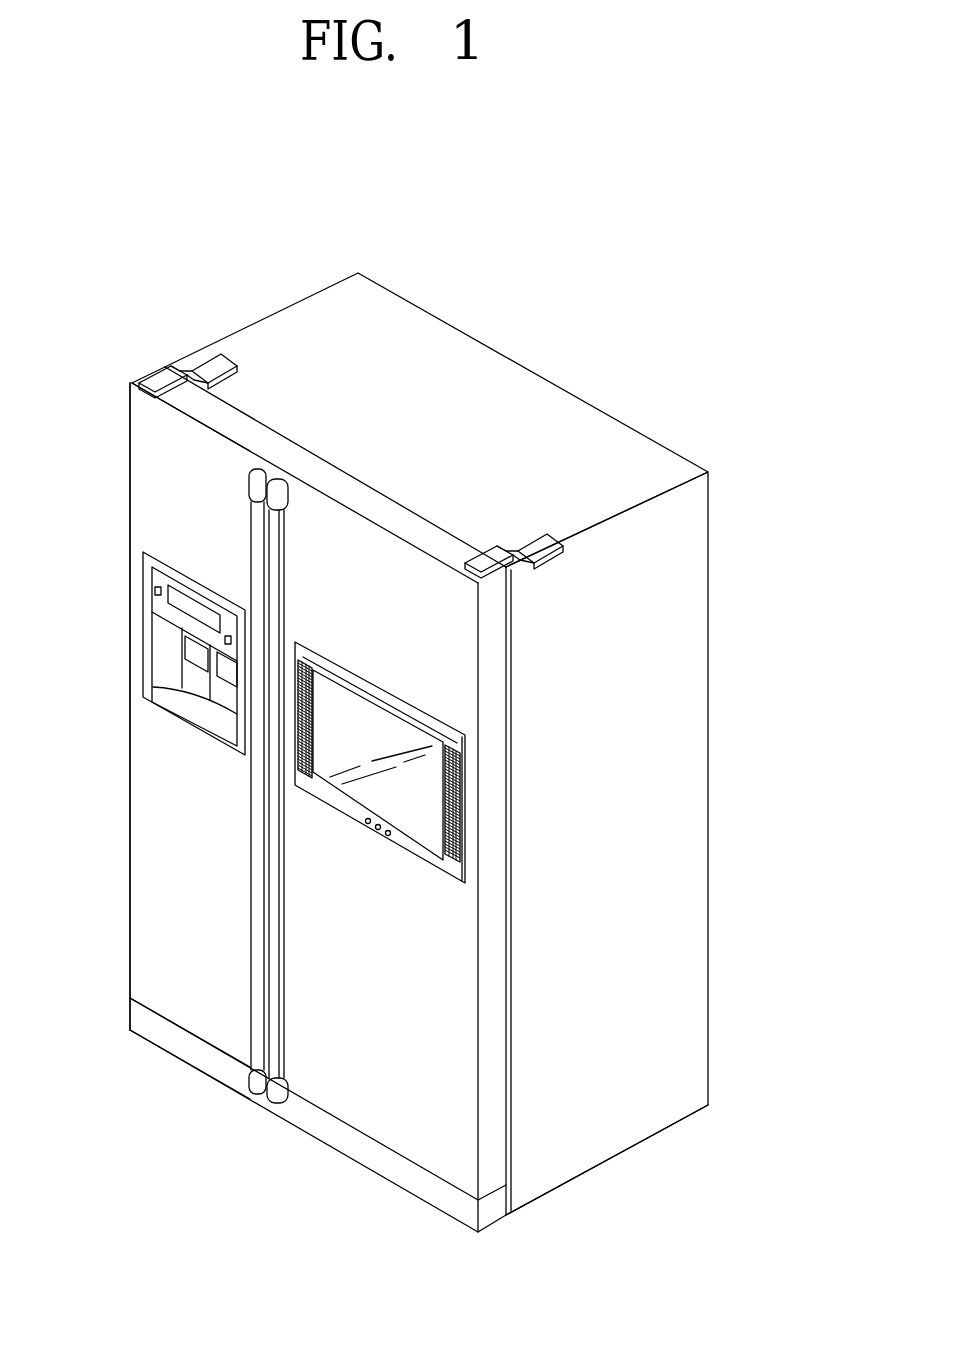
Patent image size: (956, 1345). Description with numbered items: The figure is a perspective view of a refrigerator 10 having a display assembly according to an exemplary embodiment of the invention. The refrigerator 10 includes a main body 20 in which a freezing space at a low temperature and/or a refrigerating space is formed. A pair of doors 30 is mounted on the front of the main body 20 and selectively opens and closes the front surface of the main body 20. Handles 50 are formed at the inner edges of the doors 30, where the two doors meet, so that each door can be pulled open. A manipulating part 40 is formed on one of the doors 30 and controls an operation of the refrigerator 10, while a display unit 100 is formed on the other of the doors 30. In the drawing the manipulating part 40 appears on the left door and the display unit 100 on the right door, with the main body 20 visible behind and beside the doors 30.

The refrigerator 10 is at (580, 345).
The main body 20 is at (695, 648).
The doors 30 is at (143, 807).
The manipulating part 40 is at (160, 593).
The handles 50 is at (258, 528).
The display unit 100 is at (335, 812).